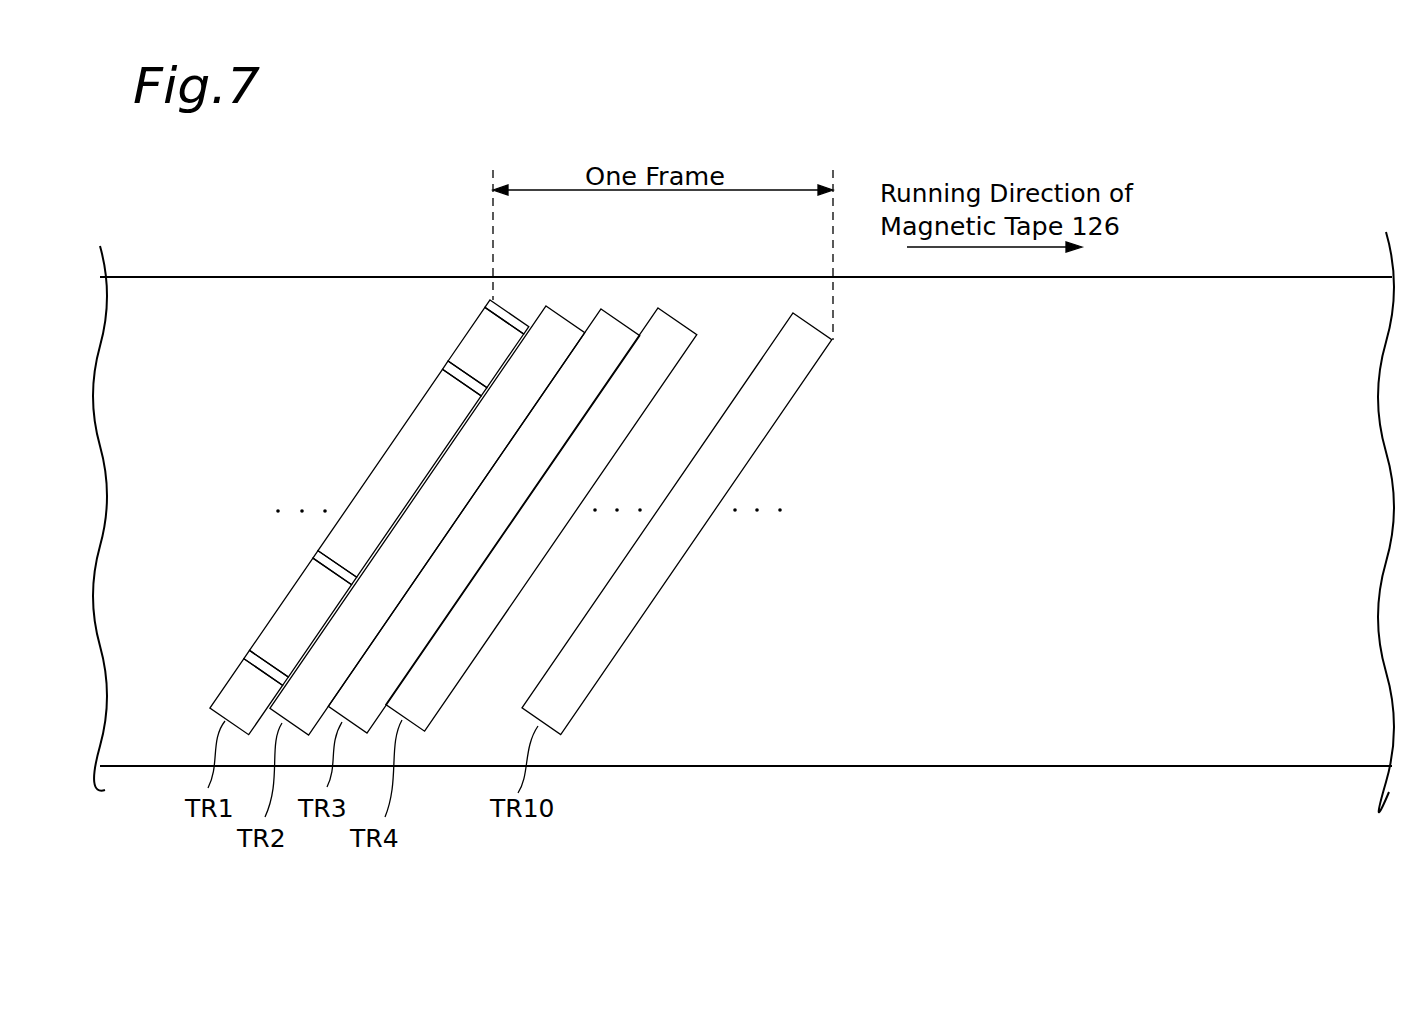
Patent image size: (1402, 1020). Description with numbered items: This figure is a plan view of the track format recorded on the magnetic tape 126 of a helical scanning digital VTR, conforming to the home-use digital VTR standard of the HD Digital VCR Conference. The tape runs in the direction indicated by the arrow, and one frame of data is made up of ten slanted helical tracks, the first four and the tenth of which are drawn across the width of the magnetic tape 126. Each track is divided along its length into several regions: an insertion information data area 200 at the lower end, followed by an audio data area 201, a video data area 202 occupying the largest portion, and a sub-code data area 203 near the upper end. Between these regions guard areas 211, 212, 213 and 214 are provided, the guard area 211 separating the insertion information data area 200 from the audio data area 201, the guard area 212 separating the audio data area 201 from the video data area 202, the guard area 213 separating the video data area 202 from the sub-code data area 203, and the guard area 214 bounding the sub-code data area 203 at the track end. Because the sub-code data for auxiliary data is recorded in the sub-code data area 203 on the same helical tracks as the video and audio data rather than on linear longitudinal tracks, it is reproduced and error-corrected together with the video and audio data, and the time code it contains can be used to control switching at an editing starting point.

The magnetic tape 126 is at (1248, 275).
The insertion information data area 200 is at (250, 698).
The audio data area 201 is at (292, 621).
The video data area 202 is at (432, 430).
The sub-code data area 203 is at (480, 346).
The guard area 211 is at (262, 655).
The guard area 212 is at (320, 553).
The guard area 213 is at (447, 372).
The guard area 214 is at (492, 302).